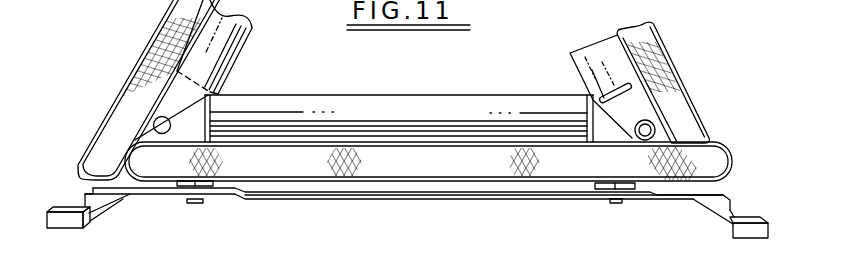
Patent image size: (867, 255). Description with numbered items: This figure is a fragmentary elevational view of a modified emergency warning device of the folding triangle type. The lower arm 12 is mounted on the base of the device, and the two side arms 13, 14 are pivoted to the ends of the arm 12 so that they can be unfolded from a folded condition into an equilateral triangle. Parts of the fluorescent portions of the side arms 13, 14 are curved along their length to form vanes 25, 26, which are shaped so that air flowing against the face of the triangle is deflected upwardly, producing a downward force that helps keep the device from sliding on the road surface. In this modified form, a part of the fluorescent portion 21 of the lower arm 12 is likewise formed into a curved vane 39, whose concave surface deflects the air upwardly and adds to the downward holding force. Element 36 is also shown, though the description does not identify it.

The arm 12 is at (443, 83).
The arm 13 is at (152, 82).
The arm 14 is at (661, 92).
The fluorescent portion 21 is at (303, 112).
The vane 25 is at (220, 56).
The vane 26 is at (573, 70).
The cross member 36 is at (520, 0).
The curved vane 39 is at (472, 108).